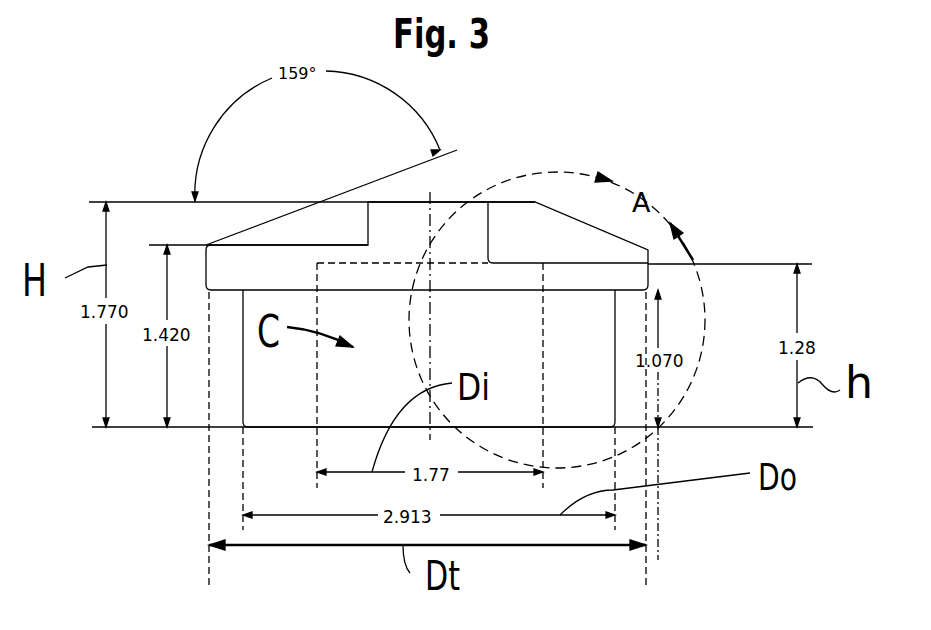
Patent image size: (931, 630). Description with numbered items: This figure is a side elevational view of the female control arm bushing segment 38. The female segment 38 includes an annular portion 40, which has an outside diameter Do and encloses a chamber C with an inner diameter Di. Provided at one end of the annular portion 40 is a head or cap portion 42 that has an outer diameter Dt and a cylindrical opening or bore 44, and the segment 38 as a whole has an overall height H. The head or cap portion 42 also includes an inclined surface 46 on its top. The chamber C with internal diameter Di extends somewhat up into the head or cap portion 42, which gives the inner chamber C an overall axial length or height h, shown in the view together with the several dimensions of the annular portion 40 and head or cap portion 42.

The female segment 38 is at (707, 217).
The annular portion 40 is at (267, 387).
The head or cap portion 42 is at (230, 263).
The cylindrical opening or bore 44 is at (370, 220).
The inclined surface 46 is at (268, 220).